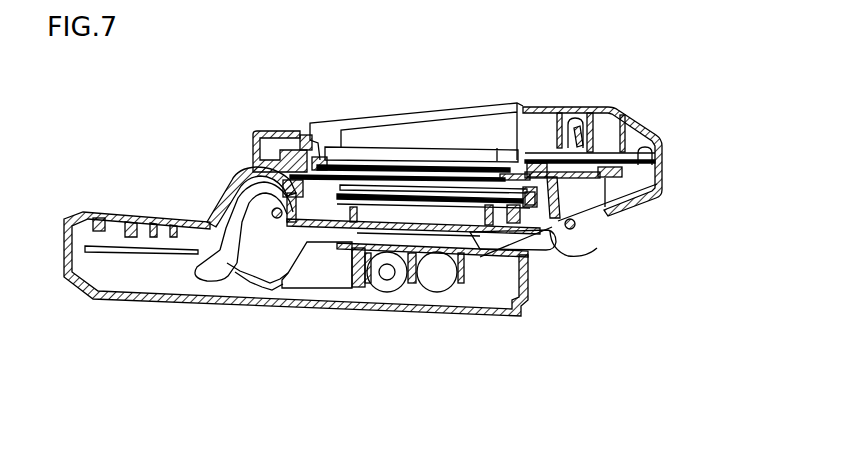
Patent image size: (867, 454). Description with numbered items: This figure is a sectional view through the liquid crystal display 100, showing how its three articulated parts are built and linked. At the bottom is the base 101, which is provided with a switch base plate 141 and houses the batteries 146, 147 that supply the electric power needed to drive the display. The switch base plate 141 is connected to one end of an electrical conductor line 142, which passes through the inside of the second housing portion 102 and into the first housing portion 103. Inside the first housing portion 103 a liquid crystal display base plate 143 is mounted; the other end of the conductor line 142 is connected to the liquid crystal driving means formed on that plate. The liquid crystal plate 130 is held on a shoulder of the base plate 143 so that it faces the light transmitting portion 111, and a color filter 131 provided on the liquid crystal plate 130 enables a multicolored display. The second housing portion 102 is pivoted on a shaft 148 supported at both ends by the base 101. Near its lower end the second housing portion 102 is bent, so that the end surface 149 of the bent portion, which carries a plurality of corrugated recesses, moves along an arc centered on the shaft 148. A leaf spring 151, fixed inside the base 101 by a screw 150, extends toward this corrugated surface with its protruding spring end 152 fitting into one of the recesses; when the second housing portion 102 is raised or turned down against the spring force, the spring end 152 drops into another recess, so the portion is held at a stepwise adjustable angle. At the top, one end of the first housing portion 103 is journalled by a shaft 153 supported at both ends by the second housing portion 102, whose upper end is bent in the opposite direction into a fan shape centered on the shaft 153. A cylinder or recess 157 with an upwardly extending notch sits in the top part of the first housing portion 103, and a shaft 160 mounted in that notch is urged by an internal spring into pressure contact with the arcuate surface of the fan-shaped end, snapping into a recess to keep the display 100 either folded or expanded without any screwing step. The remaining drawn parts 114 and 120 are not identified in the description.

The liquid crystal display 100 is at (216, 128).
The base 101 is at (502, 312).
The second housing portion 102 is at (532, 246).
The first housing portion 103 is at (664, 156).
The light transmitting portion 111 is at (432, 125).
The support plate 114 is at (447, 208).
The lid 120 is at (383, 118).
The liquid crystal plate 130 is at (343, 160).
The color filter 131 is at (398, 156).
The switch base plate 141 is at (131, 253).
The electrical conductor line 142 is at (227, 266).
The liquid crystal display base plate 143 is at (302, 152).
The battery 146 is at (388, 289).
The battery 147 is at (437, 289).
The shaft 148 is at (260, 212).
The end surface 149 is at (197, 273).
The screw 150 is at (359, 290).
The leaf spring 151 is at (315, 289).
The protruding spring end 152 is at (270, 285).
The shaft 153 is at (572, 229).
The cylinder or recess 157 is at (557, 112).
The shaft 160 is at (595, 118).